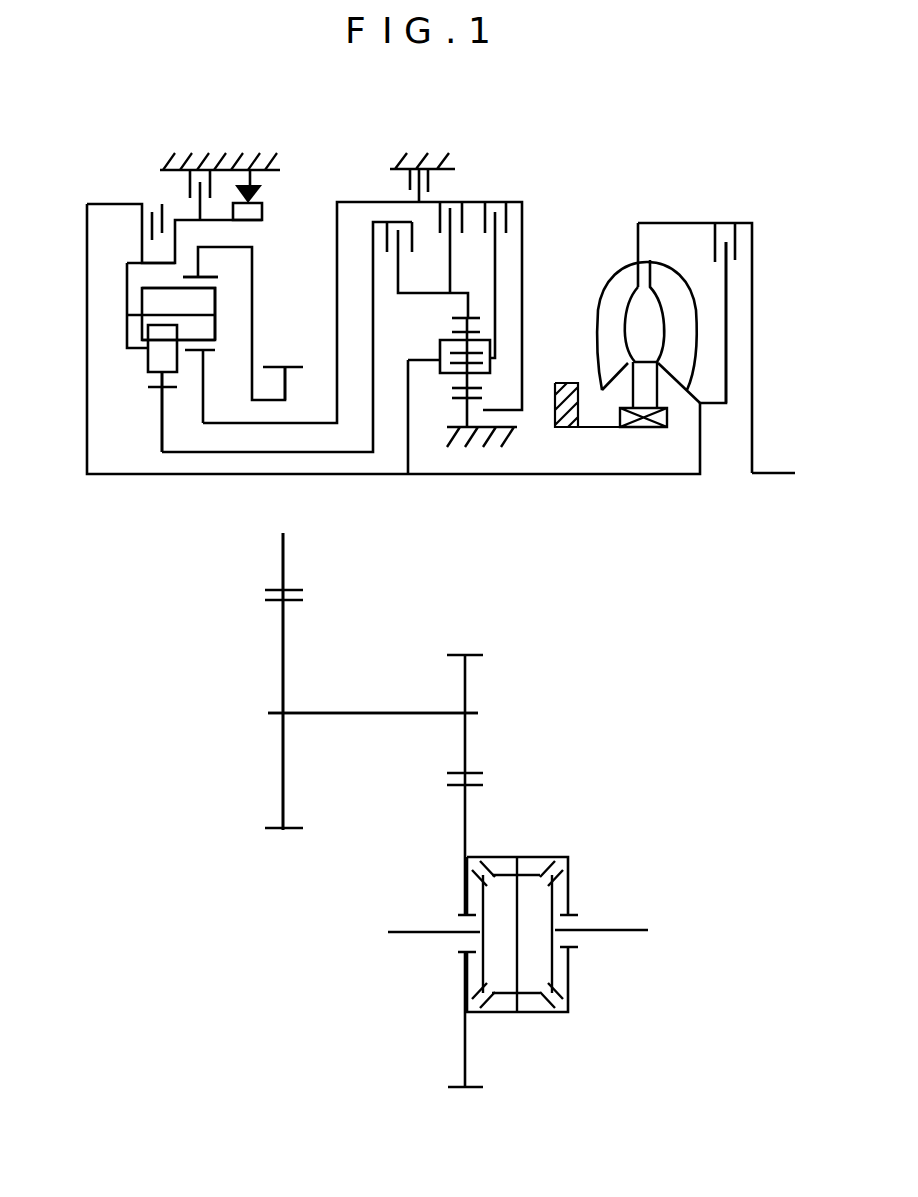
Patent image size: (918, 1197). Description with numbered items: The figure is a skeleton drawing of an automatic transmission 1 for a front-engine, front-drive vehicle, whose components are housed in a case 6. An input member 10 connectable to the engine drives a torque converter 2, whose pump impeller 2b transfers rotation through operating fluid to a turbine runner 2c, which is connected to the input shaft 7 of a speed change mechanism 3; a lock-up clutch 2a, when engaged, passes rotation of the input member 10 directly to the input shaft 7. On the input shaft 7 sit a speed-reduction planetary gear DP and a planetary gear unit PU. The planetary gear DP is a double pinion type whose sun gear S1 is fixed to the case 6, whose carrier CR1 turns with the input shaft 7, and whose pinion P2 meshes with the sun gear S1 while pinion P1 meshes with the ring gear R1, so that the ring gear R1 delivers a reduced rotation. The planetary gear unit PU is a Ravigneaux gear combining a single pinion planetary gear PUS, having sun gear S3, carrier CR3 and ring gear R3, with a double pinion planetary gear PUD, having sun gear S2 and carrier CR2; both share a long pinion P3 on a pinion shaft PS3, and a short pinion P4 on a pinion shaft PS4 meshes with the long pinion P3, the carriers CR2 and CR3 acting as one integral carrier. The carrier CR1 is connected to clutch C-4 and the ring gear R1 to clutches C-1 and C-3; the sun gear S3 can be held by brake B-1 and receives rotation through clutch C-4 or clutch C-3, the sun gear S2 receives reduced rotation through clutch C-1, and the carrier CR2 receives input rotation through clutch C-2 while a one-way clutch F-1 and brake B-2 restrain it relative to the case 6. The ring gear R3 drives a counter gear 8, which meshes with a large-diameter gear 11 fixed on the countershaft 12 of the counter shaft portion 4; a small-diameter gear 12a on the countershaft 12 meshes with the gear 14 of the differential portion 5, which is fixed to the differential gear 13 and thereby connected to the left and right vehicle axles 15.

The automatic transmission 1 is at (578, 134).
The torque converter 2 is at (650, 208).
The lock-up clutch 2a is at (727, 252).
The pump impeller 2b is at (603, 307).
The turbine runner 2c is at (663, 277).
The speed change mechanism 3 is at (332, 158).
The counter shaft portion 4 is at (262, 694).
The differential portion 5 is at (598, 845).
The case 6 is at (160, 163).
The input shaft 7 is at (505, 478).
The counter gear 8 is at (293, 367).
The input member 10 is at (770, 472).
The large-diameter gear 11 is at (287, 633).
The countershaft 12 is at (367, 715).
The small-diameter gear 12a is at (467, 673).
The differential gear 13 is at (543, 1012).
The gear 14 is at (467, 812).
The vehicle axles 15 is at (413, 935).
The planetary gear unit PU is at (112, 292).
The double pinion planetary gear PUD is at (158, 283).
The single pinion planetary gear PUS is at (190, 262).
The planetary gear DP is at (485, 303).
The carrier CR1 is at (490, 368).
The carrier CR2 is at (127, 278).
The carrier CR3 is at (213, 338).
The ring gear R1 is at (455, 318).
The ring gear R3 is at (220, 275).
The pinion P1 is at (452, 332).
The pinion P2 is at (457, 388).
The long pinion P3 is at (233, 291).
The short pinion P4 is at (147, 360).
The pinion shaft PS3 is at (190, 321).
The pinion shaft PS4 is at (160, 373).
The sun gear S1 is at (457, 399).
The sun gear S2 is at (153, 388).
The sun gear S3 is at (197, 352).
The brake B-1 is at (420, 162).
The brake B-2 is at (220, 171).
The clutch C-1 is at (427, 270).
The clutch C-2 is at (149, 210).
The clutch C-3 is at (457, 235).
The clutch C-4 is at (503, 205).
The one-way clutch F-1 is at (251, 171).